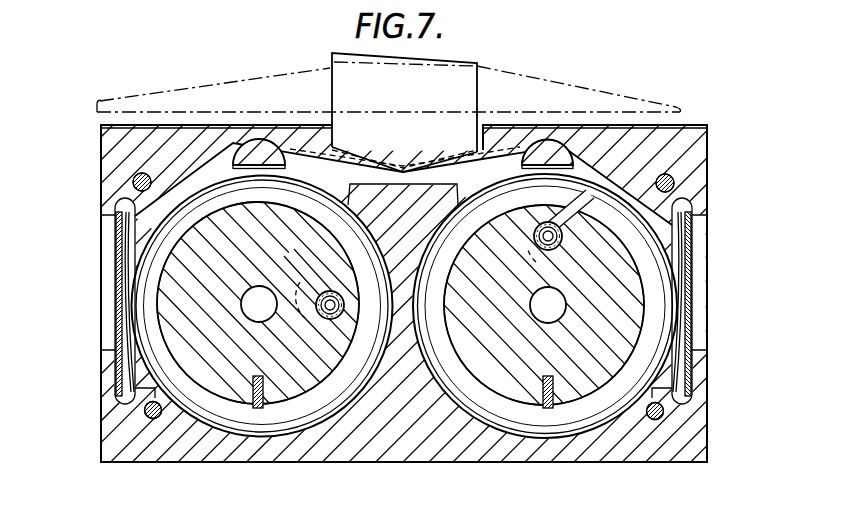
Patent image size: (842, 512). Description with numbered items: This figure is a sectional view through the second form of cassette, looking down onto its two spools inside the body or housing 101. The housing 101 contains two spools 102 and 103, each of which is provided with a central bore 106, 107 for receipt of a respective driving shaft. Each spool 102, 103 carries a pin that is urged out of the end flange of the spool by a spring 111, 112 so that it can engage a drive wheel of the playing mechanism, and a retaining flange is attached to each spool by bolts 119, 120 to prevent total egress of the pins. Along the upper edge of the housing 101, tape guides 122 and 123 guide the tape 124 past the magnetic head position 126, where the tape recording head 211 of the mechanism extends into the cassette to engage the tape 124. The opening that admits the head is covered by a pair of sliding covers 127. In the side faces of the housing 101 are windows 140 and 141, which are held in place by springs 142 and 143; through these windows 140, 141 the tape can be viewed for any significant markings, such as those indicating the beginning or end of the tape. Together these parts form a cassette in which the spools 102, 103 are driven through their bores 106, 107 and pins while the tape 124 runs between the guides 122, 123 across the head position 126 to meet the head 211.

The body or housing 101 is at (685, 141).
The spool 102 is at (288, 420).
The spool 103 is at (535, 425).
The central bore 106 is at (250, 312).
The central bore 107 is at (540, 316).
The spring 111 is at (314, 288).
The spring 112 is at (547, 184).
The bolt 119 is at (259, 185).
The bolt 120 is at (552, 252).
The tape guide 122 is at (258, 150).
The tape guide 123 is at (550, 150).
The tape 124 is at (500, 132).
The magnetic head position 126 is at (418, 138).
The sliding covers 127 is at (632, 128).
The window 140 is at (120, 268).
The window 141 is at (690, 308).
The spring 142 is at (126, 243).
The spring 143 is at (684, 238).
The tape recording head 211 is at (414, 104).